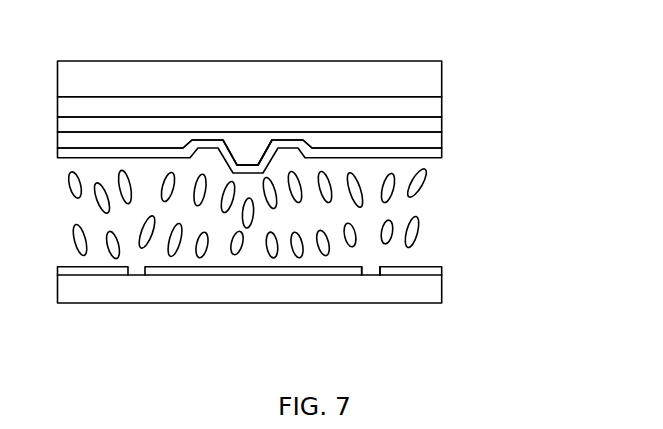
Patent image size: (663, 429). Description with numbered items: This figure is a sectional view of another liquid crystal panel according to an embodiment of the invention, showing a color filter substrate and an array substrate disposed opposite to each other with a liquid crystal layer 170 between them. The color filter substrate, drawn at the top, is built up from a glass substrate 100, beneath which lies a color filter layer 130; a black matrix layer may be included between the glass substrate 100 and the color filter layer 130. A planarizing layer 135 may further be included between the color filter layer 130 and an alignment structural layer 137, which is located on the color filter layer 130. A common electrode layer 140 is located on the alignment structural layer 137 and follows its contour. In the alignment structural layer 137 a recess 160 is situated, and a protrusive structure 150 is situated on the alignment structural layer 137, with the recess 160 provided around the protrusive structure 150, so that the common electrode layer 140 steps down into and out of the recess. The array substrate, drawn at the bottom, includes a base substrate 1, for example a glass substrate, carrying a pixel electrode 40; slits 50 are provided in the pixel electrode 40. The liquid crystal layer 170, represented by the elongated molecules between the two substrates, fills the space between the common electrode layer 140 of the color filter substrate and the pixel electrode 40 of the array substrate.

The base substrate 1 is at (442, 293).
The pixel electrode 40 is at (442, 272).
The slits 50 is at (363, 270).
The glass substrate 100 is at (442, 80).
The color filter layer 130 is at (442, 105).
The planarizing layer 135 is at (442, 122).
The alignment structural layer 137 is at (442, 140).
The common electrode layer 140 is at (442, 153).
The protrusive structure 150 is at (248, 158).
The recess 160 is at (293, 145).
The liquid crystal layer 170 is at (407, 200).